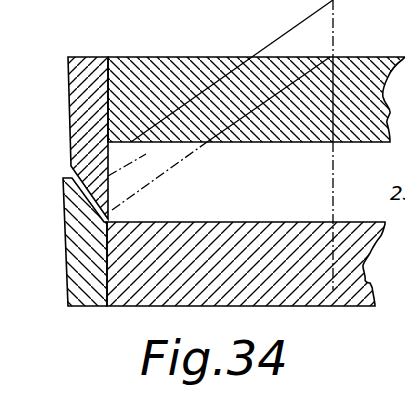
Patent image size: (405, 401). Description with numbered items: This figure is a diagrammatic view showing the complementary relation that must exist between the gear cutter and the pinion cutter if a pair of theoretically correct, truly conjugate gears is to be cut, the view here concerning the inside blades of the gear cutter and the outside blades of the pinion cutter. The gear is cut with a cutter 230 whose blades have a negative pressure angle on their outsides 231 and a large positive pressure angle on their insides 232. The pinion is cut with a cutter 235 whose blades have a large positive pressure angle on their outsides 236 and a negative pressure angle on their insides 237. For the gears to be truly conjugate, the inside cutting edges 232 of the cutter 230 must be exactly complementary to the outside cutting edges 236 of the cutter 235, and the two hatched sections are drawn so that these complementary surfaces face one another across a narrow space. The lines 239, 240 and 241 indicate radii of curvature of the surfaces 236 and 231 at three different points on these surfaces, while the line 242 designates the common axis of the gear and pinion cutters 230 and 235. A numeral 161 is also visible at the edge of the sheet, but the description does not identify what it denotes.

The reference numeral (partially visible) 161 is at (54, 5).
The cutter 230 is at (213, 306).
The outsides of the blades 231 is at (63, 201).
The insides of the blades 232 is at (112, 213).
The cutter 235 is at (190, 62).
The outsides of the blades 236 is at (72, 171).
The insides of the blades 237 is at (170, 141).
The line 239 is at (232, 71).
The line 240 is at (303, 50).
The line 241 is at (317, 68).
The line 242 is at (333, 172).